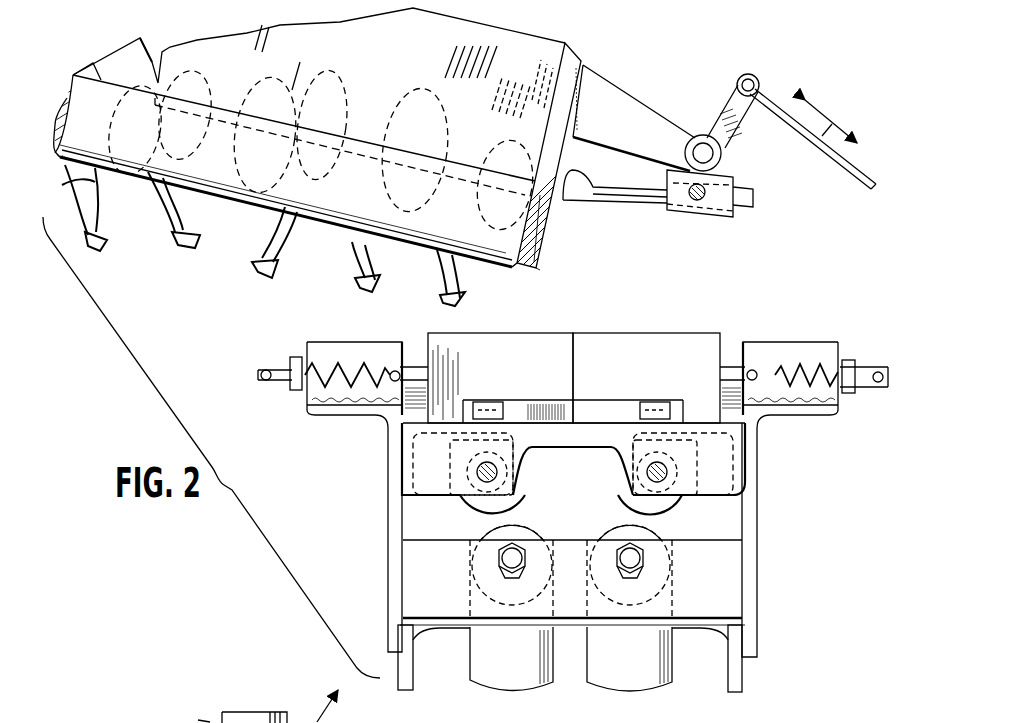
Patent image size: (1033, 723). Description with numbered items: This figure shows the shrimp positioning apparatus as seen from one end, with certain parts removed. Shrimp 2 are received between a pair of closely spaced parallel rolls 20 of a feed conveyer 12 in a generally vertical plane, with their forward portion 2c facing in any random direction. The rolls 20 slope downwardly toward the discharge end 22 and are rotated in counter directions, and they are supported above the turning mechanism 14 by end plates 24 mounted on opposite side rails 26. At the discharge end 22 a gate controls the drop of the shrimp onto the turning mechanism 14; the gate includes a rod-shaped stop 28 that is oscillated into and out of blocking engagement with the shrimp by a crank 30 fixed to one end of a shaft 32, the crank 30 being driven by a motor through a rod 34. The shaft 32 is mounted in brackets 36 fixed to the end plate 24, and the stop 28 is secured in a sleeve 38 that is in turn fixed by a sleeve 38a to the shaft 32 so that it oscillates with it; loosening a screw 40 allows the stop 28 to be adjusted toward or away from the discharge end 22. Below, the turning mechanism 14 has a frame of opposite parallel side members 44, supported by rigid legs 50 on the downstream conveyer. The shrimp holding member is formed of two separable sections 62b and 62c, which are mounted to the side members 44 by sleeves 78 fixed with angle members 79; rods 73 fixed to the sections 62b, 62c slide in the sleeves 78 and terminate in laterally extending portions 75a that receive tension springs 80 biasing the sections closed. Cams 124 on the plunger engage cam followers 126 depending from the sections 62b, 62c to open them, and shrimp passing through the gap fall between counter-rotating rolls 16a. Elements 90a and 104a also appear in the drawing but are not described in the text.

The shrimp 2 is at (345, 253).
The forward portion 2c is at (286, 72).
The feed conveyer 12 is at (500, 58).
The turning mechanism 14 is at (615, 325).
The counter-rotating rolls 16a is at (600, 673).
The rolls 20 is at (208, 218).
The discharge end 22 is at (518, 272).
The end plates 24 is at (586, 62).
The side rails 26 is at (341, 32).
The stop 28 is at (598, 186).
The crank 30 is at (722, 100).
The shaft 32 is at (714, 154).
The rod 34 is at (828, 170).
The brackets 36 is at (612, 103).
The sleeve 38 is at (730, 213).
The sleeve 38a is at (717, 165).
The screw 40 is at (697, 200).
The side members 44 is at (405, 470).
The legs 50 is at (750, 549).
The holding member section 62b is at (500, 378).
The holding member section 62c is at (646, 378).
The rods 73 is at (418, 365).
The laterally extending portions 75a is at (266, 368).
The sleeves 78 is at (363, 350).
The angle members 79 is at (380, 422).
The tension springs 80 is at (325, 362).
The cams 124 is at (507, 420).
The cam followers 126 is at (662, 405).
The element 90a is at (153, 718).
The element 104a is at (257, 706).